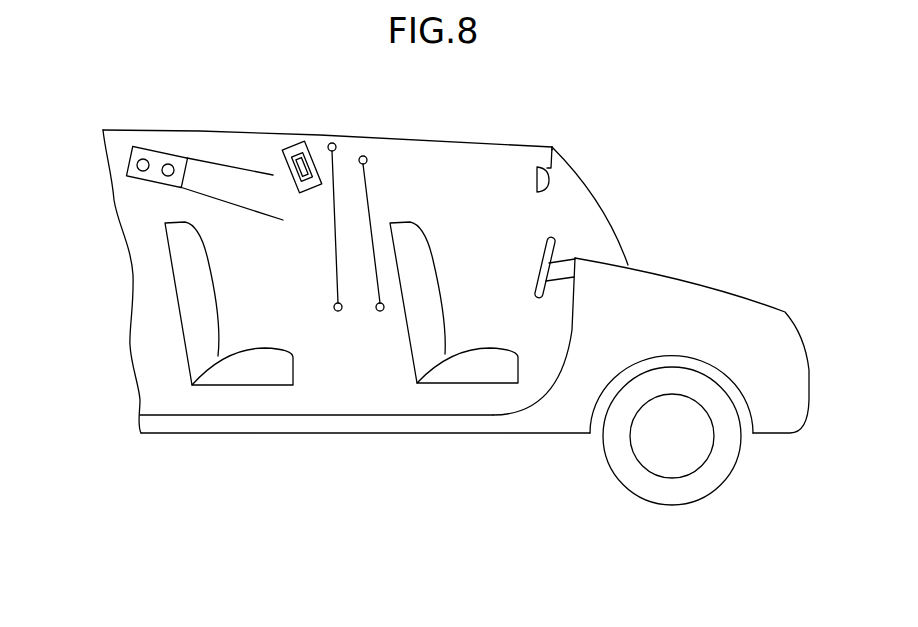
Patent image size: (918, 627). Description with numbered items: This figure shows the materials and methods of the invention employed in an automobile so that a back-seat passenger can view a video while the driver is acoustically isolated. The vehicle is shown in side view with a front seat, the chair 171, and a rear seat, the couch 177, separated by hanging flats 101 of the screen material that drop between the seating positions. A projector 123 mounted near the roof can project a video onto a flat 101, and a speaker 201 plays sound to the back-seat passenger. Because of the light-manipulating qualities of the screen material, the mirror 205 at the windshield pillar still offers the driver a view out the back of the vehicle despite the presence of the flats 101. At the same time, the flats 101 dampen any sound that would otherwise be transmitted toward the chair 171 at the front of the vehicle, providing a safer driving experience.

The flat 101 is at (368, 193).
The projector 123 is at (143, 160).
The speaker 201 is at (293, 147).
The mirror 205 is at (553, 163).
The couch 177 is at (190, 265).
The chair 171 is at (452, 372).